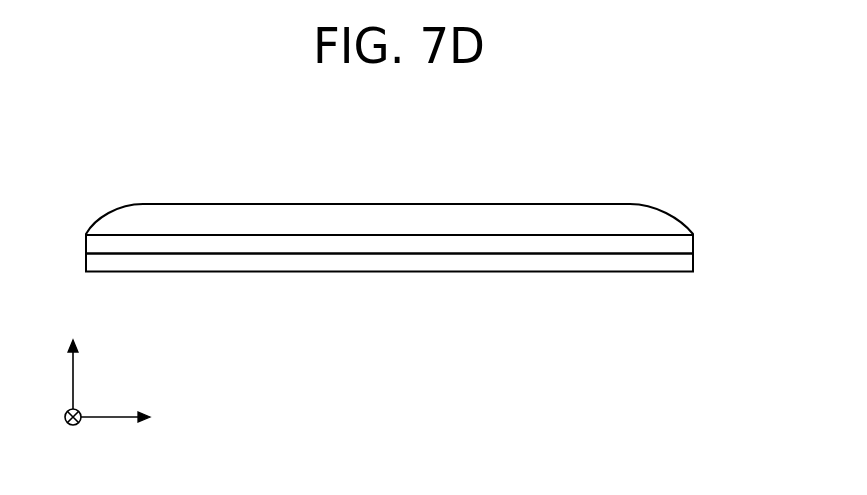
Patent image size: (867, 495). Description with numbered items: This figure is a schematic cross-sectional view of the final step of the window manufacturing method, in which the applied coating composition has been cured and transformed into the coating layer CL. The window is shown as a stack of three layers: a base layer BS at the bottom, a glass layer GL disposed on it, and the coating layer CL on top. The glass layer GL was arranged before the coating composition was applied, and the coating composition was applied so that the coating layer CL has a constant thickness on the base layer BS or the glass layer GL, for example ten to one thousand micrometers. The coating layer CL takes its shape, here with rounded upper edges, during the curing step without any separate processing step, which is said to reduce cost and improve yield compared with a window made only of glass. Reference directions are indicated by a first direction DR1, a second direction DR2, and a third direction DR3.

The coating layer CL is at (661, 219).
The glass layer GL is at (683, 241).
The base layer BS is at (683, 262).
The first direction DR1 is at (139, 419).
The second direction DR2 is at (75, 433).
The third direction DR3 is at (75, 362).